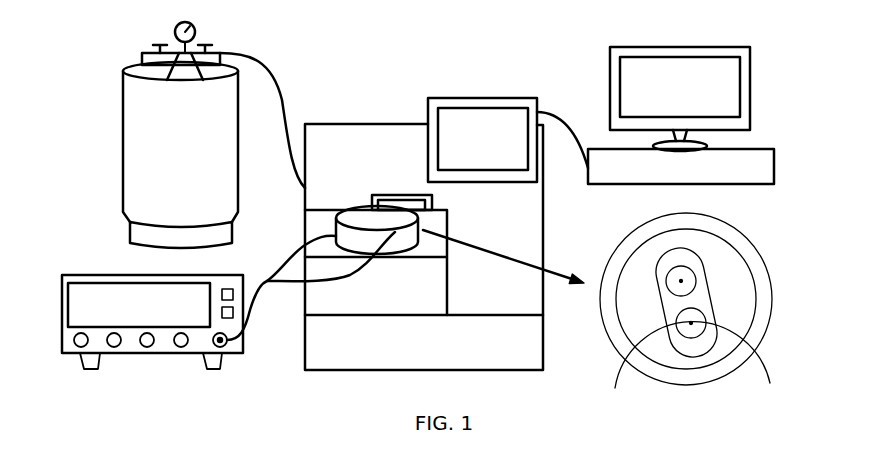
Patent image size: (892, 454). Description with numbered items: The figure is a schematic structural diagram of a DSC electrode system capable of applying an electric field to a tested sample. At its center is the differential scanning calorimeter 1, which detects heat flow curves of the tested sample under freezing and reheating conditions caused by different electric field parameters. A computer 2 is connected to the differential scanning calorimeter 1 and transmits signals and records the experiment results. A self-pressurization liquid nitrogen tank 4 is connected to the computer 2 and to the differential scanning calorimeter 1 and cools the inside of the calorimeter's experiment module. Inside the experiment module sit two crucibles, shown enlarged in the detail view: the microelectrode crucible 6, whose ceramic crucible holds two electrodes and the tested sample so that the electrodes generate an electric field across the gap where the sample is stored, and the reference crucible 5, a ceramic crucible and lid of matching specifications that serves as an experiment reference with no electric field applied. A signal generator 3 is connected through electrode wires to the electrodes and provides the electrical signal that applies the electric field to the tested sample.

The differential scanning calorimeter 1 is at (372, 117).
The computer 2 is at (763, 143).
The signal generator 3 is at (230, 272).
The self-pressurization liquid nitrogen tank 4 is at (225, 45).
The reference crucible 5 is at (700, 272).
The microelectrode crucible 6 is at (707, 318).